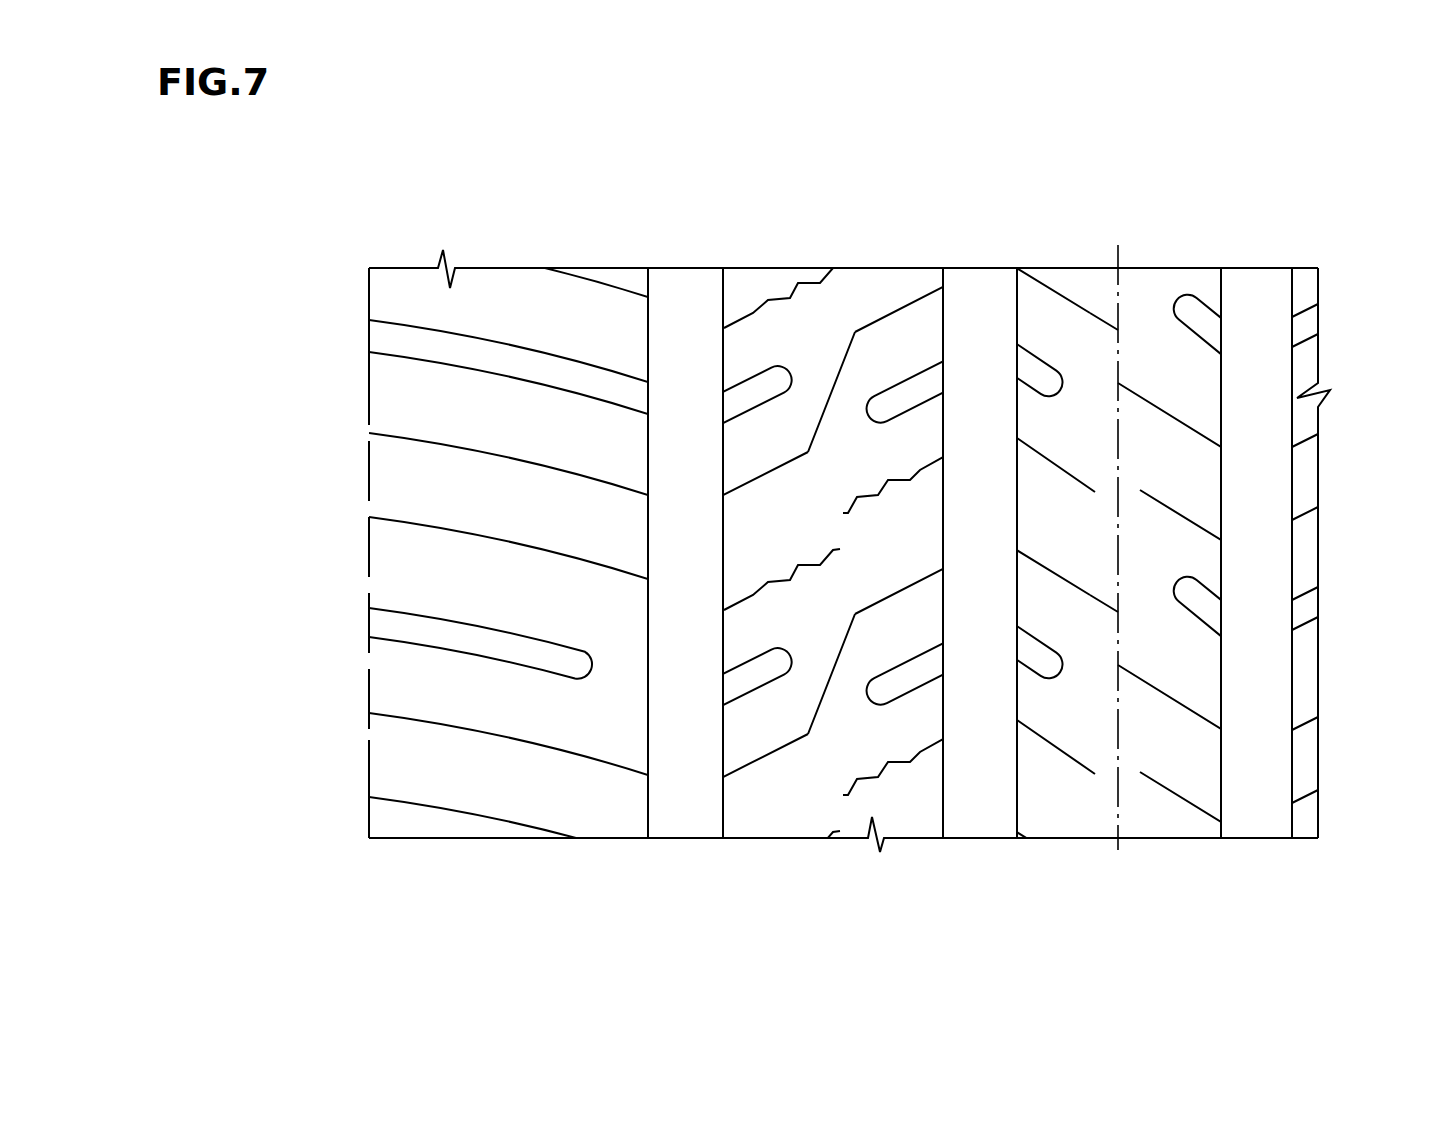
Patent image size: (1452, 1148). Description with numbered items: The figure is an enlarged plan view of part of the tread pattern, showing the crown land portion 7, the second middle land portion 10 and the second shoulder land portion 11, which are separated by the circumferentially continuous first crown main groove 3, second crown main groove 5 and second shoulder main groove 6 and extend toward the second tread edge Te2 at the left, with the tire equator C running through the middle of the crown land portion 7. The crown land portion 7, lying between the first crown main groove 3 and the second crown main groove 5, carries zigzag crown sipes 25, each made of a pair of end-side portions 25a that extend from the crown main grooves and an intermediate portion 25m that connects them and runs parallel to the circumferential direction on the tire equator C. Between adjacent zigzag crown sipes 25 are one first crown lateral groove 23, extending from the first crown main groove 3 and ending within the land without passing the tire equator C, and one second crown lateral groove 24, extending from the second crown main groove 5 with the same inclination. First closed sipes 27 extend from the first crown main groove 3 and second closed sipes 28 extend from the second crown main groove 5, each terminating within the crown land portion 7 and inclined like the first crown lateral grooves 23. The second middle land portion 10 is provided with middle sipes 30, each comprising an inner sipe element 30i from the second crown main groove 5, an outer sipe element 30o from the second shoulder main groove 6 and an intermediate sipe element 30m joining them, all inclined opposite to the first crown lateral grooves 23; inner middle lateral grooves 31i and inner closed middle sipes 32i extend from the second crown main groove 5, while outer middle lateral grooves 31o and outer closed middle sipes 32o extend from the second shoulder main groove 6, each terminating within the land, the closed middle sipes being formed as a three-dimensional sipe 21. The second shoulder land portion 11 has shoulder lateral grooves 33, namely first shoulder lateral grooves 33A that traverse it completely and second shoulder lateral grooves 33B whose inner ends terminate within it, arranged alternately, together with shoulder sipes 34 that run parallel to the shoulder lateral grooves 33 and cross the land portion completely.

The second tread edge Te2 is at (368, 297).
The first crown main groove 3 is at (1253, 812).
The second crown main groove 5 is at (976, 812).
The second shoulder main groove 6 is at (684, 812).
The crown land portion 7 is at (1195, 523).
The second middle land portion 10 is at (821, 534).
The second shoulder land portion 11 is at (424, 548).
The three-dimensional sipe 21 is at (837, 579).
The first crown lateral groove 23 is at (1195, 590).
The second crown lateral groove 24 is at (1038, 373).
The zigzag crown sipe 25 is at (1191, 505).
The end-side portion 25a is at (1092, 312).
The intermediate portion 25m is at (1120, 353).
The first closed sipe 27 is at (1185, 512).
The second closed sipe 28 is at (1055, 467).
The middle sipe 30 is at (800, 455).
The outer sipe element 30o is at (785, 463).
The intermediate sipe element 30m is at (840, 360).
The inner sipe element 30i is at (879, 398).
The outer middle lateral groove 31o is at (757, 673).
The inner middle lateral groove 31i is at (917, 393).
The outer closed middle sipe 32o is at (787, 575).
The inner closed middle sipe 32i is at (887, 489).
The shoulder lateral groove 33 is at (424, 499).
The first shoulder lateral groove 33A is at (447, 347).
The second shoulder lateral groove 33B is at (447, 630).
The shoulder sipe 34 is at (482, 448).
The tire equator C is at (1118, 529).